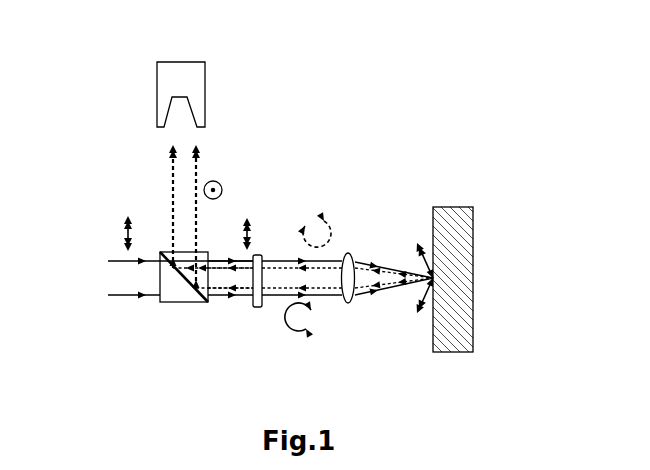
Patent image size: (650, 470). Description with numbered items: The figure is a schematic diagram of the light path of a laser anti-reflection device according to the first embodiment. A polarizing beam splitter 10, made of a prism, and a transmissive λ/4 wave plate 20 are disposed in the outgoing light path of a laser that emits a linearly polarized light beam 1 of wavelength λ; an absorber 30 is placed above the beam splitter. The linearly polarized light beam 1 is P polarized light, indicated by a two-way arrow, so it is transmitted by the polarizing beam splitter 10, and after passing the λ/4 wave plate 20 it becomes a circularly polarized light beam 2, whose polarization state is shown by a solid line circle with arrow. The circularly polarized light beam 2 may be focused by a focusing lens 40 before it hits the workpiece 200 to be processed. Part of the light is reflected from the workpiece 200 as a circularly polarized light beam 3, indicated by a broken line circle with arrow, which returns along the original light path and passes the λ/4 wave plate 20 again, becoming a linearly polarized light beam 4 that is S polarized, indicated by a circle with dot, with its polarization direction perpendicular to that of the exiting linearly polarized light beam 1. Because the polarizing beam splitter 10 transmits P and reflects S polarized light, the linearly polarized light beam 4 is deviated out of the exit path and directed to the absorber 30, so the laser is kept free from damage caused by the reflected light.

The linearly polarized light beam 1 is at (125, 297).
The polarizing beam splitter 10 is at (182, 302).
The λ/4 wave plate 20 is at (258, 307).
The circularly polarized light beam 2 is at (290, 297).
The circularly polarized light beam 3 is at (275, 262).
The linearly polarized light beam 4 is at (218, 262).
The absorber 30 is at (182, 73).
The focusing lens 40 is at (352, 305).
The workpiece 200 is at (443, 206).